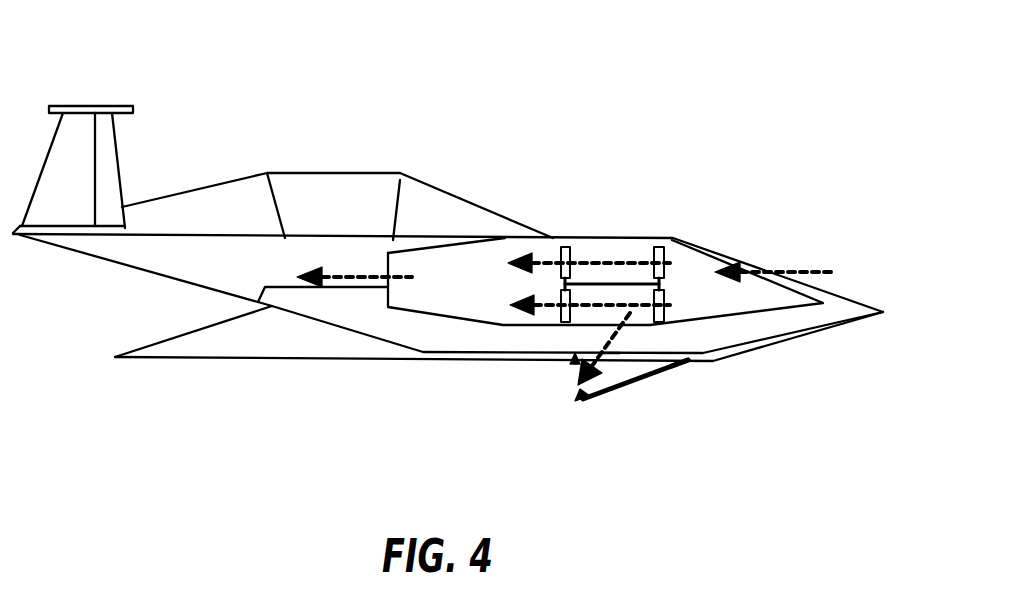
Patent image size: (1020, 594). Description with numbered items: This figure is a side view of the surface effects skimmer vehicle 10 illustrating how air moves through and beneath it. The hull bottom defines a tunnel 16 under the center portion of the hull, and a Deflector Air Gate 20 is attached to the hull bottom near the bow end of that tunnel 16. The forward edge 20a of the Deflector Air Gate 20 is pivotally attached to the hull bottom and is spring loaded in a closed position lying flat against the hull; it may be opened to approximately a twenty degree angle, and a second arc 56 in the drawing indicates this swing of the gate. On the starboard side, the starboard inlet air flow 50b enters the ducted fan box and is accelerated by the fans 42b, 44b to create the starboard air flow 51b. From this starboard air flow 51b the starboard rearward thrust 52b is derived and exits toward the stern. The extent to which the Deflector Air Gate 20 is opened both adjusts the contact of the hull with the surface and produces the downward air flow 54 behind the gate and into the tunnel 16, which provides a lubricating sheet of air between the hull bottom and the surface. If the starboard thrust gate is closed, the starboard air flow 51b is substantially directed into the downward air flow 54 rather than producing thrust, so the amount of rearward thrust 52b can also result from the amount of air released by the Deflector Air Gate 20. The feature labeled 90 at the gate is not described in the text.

The surface effects skimmer vehicle 10 is at (542, 122).
The tunnel 16 is at (417, 360).
The Deflector Air Gate 20 is at (648, 376).
The forward edge 20a is at (700, 363).
The fan 42b is at (662, 246).
The fan 44b is at (556, 250).
The starboard inlet air flow 50b is at (803, 272).
The starboard air flow 51b is at (589, 261).
The starboard rearward thrust 52b is at (357, 273).
The downward air flow 54 is at (610, 356).
The second arc 56 is at (574, 362).
The actuator 90 is at (579, 402).